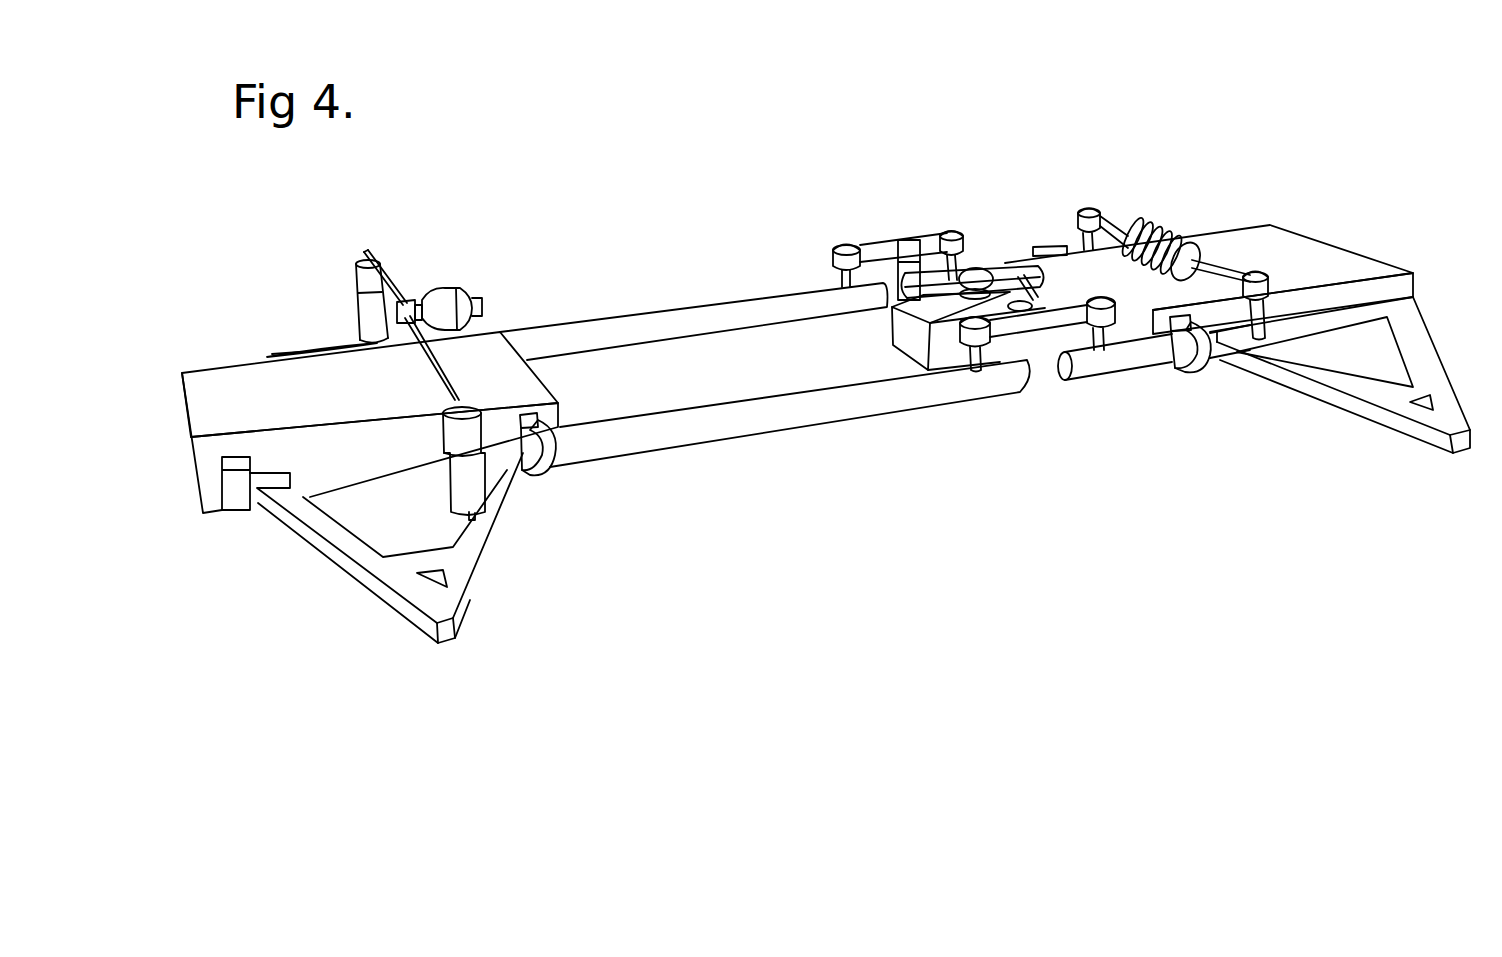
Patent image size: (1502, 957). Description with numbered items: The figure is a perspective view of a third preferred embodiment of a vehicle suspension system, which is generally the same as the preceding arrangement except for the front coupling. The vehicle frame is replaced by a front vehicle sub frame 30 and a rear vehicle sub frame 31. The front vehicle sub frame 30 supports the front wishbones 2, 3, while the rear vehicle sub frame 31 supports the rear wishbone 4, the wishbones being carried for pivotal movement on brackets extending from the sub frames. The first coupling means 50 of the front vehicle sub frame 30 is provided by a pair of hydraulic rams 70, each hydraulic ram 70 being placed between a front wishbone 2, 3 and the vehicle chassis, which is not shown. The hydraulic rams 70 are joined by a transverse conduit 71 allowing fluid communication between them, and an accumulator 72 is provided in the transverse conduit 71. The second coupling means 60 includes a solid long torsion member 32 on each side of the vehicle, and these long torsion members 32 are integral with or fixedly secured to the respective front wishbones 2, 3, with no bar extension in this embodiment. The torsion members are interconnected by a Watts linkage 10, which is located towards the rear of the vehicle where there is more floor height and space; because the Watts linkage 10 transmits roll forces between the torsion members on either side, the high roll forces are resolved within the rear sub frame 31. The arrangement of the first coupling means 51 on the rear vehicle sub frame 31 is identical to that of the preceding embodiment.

The front wishbone 2 is at (440, 603).
The front wishbone 3 is at (303, 343).
The rear wishbone 4 is at (1447, 413).
The Watts linkage 10 is at (988, 250).
The front vehicle sub frame 30 is at (242, 396).
The rear vehicle sub frame 31 is at (1242, 257).
The long torsion member 32 is at (680, 323).
The first coupling means 50 is at (413, 282).
The first coupling means 51 is at (1122, 203).
The second coupling means 60 is at (838, 442).
The hydraulic ram 70 is at (367, 323).
The transverse conduit 71 is at (447, 370).
The accumulator 72 is at (447, 313).